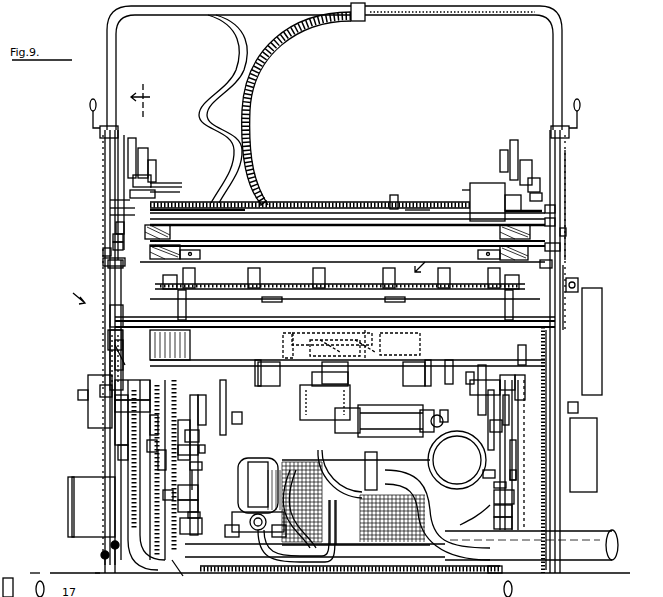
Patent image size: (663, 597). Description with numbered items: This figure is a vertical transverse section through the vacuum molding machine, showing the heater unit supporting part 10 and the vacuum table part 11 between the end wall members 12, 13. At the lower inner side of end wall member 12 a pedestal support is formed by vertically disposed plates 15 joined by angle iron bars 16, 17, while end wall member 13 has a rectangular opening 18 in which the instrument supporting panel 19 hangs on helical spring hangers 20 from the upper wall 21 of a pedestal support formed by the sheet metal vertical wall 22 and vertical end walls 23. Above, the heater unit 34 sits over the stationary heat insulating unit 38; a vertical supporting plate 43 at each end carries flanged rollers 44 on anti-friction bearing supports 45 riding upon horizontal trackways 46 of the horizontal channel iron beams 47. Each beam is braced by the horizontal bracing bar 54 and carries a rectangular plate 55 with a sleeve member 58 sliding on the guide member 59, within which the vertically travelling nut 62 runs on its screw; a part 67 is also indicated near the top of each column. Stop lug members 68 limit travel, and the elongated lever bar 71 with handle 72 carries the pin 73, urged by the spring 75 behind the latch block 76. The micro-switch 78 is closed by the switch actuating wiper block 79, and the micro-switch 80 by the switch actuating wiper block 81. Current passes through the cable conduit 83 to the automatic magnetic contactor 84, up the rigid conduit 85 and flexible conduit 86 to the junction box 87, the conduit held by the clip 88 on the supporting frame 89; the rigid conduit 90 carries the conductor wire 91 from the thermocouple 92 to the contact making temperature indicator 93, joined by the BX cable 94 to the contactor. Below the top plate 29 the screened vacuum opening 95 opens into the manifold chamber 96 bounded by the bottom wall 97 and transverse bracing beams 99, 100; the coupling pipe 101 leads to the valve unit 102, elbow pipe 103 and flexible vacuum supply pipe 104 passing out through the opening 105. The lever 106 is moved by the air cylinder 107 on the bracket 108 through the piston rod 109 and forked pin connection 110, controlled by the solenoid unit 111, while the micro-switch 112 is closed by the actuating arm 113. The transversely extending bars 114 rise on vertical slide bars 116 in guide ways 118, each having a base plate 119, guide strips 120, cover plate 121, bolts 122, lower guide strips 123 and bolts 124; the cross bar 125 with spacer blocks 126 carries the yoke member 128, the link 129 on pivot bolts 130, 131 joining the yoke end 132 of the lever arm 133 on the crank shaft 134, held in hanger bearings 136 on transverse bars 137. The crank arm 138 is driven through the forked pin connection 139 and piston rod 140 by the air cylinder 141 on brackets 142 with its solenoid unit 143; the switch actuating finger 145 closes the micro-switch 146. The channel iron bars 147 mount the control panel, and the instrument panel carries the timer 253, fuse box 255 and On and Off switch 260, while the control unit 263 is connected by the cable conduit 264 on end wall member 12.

The heater unit supporting part 10 is at (103, 187).
The vacuum table part 11 is at (102, 583).
The end wall member 12 is at (565, 272).
The end wall member 13 is at (116, 226).
The vertically disposed plates 15 is at (563, 505).
The angle iron bar 16 is at (527, 355).
The angle iron bar 17 is at (502, 572).
The rectangular opening 18 is at (72, 338).
The instrument supporting panel 19 is at (115, 440).
The helical spring hangers 20 is at (115, 350).
The upper wall 21 is at (130, 327).
The sheet metal vertical wall 22 is at (160, 480).
The vertical end walls 23 is at (128, 565).
The top plate 29 is at (292, 333).
The heater unit 34 is at (418, 205).
The stationary heat insulating unit 38 is at (357, 235).
The vertical supporting plate 43 is at (158, 173).
The flanged rollers 44 is at (137, 152).
The anti-friction bearing supports 45 is at (148, 163).
The horizontal trackways 46 is at (133, 178).
The horizontal channel iron beams 47 is at (130, 192).
The horizontal bracing bar 54 is at (103, 258).
The rectangular plate 55 is at (113, 245).
The sleeve member 58 is at (113, 237).
The guide member 59 is at (112, 155).
The vertically travelling nut 62 is at (103, 251).
The handle 67 is at (90, 111).
The stop lug member 68 is at (160, 195).
The elongated lever bar 71 is at (182, 188).
The handle 72 is at (182, 183).
The pin 73 is at (110, 208).
The spring 75 is at (204, 212).
The latch block 76 is at (110, 200).
The micro-switch 78 is at (110, 215).
The switch actuating wiper block 79 is at (170, 234).
The micro-switch 80 is at (566, 200).
The switch actuating wiper block 81 is at (505, 213).
The cable conduit 83 is at (578, 284).
The automatic magnetic contactor 84 is at (602, 333).
The rigid conduit 85 is at (563, 66).
The flexible conduit 86 is at (258, 101).
The junction box 87 is at (478, 183).
The clip 88 is at (396, 195).
The supporting frame 89 is at (328, 200).
The rigid conduit 90 is at (117, 58).
The conductor wire 91 is at (216, 80).
The thermocouple 92 is at (347, 227).
The contact making temperature indicator 93 is at (100, 390).
The BX cable 94 is at (140, 486).
The screened vacuum opening 95 is at (328, 333).
The manifold chamber 96 is at (360, 333).
The bottom wall 97 is at (410, 350).
The transverse bracing beam 99 is at (382, 343).
The transverse bracing beam 100 is at (292, 343).
The coupling pipe 101 is at (310, 354).
The valve unit 102 is at (348, 372).
The elbow pipe 103 is at (377, 470).
The flexible vacuum supply pipe 104 is at (472, 511).
The opening 105 is at (567, 522).
The lever 106 is at (300, 390).
The air cylinder 107 is at (438, 415).
The bracket 108 is at (449, 360).
The piston rod 109 is at (360, 418).
The forked pin connection 110 is at (395, 403).
The solenoid unit 111 is at (453, 413).
The micro-switch 112 is at (365, 468).
The actuating arm 113 is at (340, 474).
The transversely extending bar 114 is at (163, 280).
The vertical slide bars 116 is at (186, 300).
The guide ways 118 is at (220, 407).
The base plate 119 is at (526, 407).
The guide strips 120 is at (150, 403).
The cover plate 121 is at (335, 358).
The bolts 122 is at (486, 372).
The guide strips 123 is at (526, 455).
The bolts 124 is at (516, 475).
The cross bar 125 is at (198, 492).
The spacer blocks 126 is at (198, 506).
The yoke member 128 is at (494, 522).
The link 129 is at (202, 463).
The pivot bolt 130 is at (200, 515).
The pivot bolt 131 is at (465, 448).
The yoke end 132 is at (199, 436).
The lever arm 133 is at (198, 395).
The crank shaft 134 is at (226, 392).
The hanger bearings 136 is at (258, 367).
The transverse bars 137 is at (255, 365).
The crank arm 138 is at (470, 372).
The forked pin connection 139 is at (223, 448).
The piston rod 140 is at (248, 463).
The air cylinder 141 is at (246, 484).
The brackets 142 is at (232, 540).
The solenoid unit 143 is at (240, 530).
The switch actuating finger 145 is at (163, 494).
The micro-switch 146 is at (184, 576).
The channel iron bars 147 is at (415, 560).
The timer 253 is at (88, 385).
The fuse box 255 is at (72, 512).
The On and Off switch 260 is at (118, 461).
The control unit 263 is at (597, 452).
The cable conduit 264 is at (578, 408).